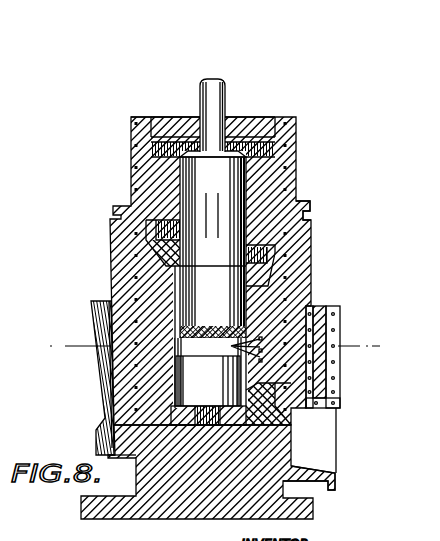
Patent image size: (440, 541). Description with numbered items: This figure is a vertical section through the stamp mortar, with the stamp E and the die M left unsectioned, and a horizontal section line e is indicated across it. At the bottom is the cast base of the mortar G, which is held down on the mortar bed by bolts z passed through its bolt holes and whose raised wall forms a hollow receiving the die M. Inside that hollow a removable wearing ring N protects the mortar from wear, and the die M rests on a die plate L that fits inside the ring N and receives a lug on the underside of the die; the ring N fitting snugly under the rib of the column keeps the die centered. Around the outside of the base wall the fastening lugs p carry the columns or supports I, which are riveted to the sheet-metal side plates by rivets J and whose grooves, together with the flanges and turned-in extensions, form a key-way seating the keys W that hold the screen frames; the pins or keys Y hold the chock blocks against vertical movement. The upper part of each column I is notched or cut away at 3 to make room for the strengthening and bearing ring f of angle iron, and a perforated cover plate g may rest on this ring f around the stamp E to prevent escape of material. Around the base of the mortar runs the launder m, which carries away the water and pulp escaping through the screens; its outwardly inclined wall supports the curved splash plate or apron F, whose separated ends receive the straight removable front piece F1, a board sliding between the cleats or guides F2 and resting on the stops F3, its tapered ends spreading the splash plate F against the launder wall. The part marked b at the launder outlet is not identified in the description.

The stamp E is at (220, 82).
The perforated cover plate g is at (221, 113).
The strengthening and bearing ring f is at (239, 118).
The rivets J is at (289, 119).
The columns or supports I is at (289, 157).
The keys W is at (305, 196).
The notch or cut-away of column 3 is at (157, 109).
The bolts z is at (158, 228).
The section line e— e is at (221, 336).
The curved splash plate or apron F is at (93, 368).
The removable front piece F1 is at (311, 298).
The cleats or guides F2 is at (300, 298).
The stops F3 is at (333, 396).
The die M is at (211, 372).
The pins or keys Y is at (236, 349).
The removable wearing ring N is at (165, 390).
The die plate L is at (204, 374).
The fastening lugs p is at (284, 417).
The launder m is at (107, 445).
The flange b is at (330, 478).
The base of the mortar G is at (148, 512).